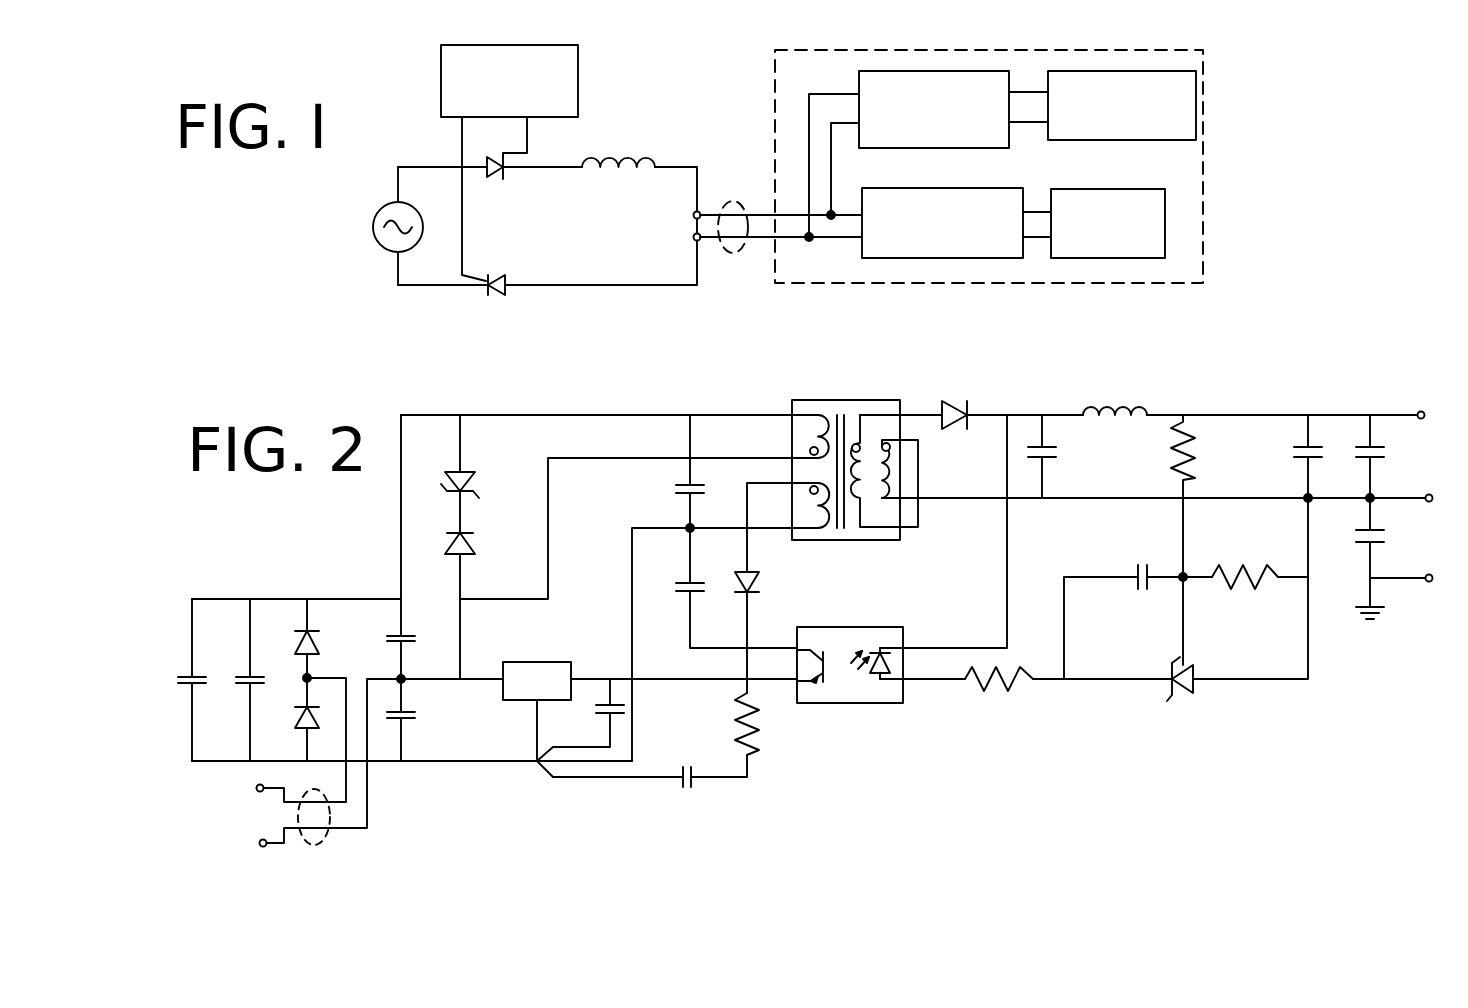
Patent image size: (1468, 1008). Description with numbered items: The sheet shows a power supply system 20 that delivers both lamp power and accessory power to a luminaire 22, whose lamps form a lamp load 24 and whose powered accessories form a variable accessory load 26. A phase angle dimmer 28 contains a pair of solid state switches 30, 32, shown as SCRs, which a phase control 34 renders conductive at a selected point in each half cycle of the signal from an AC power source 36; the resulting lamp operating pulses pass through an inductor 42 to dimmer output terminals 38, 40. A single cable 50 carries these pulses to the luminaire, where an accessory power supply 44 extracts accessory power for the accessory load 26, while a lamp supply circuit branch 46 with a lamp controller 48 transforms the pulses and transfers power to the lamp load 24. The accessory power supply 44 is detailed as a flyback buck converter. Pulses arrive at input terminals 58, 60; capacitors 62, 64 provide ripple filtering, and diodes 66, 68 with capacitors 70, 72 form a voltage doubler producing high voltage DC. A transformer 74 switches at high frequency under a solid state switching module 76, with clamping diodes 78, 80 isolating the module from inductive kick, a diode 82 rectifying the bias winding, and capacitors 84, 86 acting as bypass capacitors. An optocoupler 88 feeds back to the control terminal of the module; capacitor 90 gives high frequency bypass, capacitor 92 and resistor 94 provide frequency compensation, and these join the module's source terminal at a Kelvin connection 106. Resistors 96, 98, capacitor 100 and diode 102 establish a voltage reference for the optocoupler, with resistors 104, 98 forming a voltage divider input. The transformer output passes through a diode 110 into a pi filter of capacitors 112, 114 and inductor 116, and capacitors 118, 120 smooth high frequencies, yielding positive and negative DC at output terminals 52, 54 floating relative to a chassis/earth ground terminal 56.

In FIG. 1, the power supply system 20 is at (1270, 80).
In FIG. 1, the luminaire 22 is at (838, 284).
In FIG. 1, the lamp load 24 is at (1133, 258).
In FIG. 1, the accessory load 26 is at (1138, 71).
In FIG. 1, the phase angle dimmer 28 is at (632, 90).
In FIG. 1, the solid state switch 30 is at (504, 172).
In FIG. 1, the solid state switch 32 is at (487, 290).
In FIG. 1, the phase control 34 is at (441, 80).
In FIG. 1, the AC power source 36 is at (419, 220).
In FIG. 1, the dimmer output terminal 38 is at (693, 215).
In FIG. 2, the dimmer output terminal 38 is at (256, 789).
In FIG. 1, the dimmer output terminal 40 is at (693, 238).
In FIG. 2, the dimmer output terminal 40 is at (259, 843).
In FIG. 1, the inductor 42 is at (648, 163).
In FIG. 1, the accessory power supply 44 is at (952, 71).
In FIG. 1, the lamp supply circuit branch 46 is at (1214, 233).
In FIG. 1, the lamp controller 48 is at (927, 258).
In FIG. 1, the cable 50 is at (733, 200).
In FIG. 2, the cable 50 is at (330, 838).
In FIG. 2, the output terminal 52 is at (1419, 410).
In FIG. 2, the output terminal 54 is at (1428, 502).
In FIG. 2, the chassis/earth ground terminal 56 is at (1429, 588).
In FIG. 2, the power supply input terminal 58 is at (311, 677).
In FIG. 2, the power supply input terminal 60 is at (405, 679).
In FIG. 2, the capacitor 62 is at (194, 676).
In FIG. 2, the capacitor 64 is at (248, 685).
In FIG. 2, the diode 66 is at (300, 630).
In FIG. 2, the diode 68 is at (298, 721).
In FIG. 2, the capacitor 70 is at (391, 630).
In FIG. 2, the capacitor 72 is at (410, 715).
In FIG. 2, the transformer 74 is at (866, 400).
In FIG. 2, the solid state switching module 76 is at (558, 662).
In FIG. 2, the clamping diode 78 is at (478, 466).
In FIG. 2, the clamping diode 80 is at (470, 538).
In FIG. 2, the diode 82 is at (760, 580).
In FIG. 2, the capacitor 84 is at (676, 489).
In FIG. 2, the capacitor 86 is at (685, 583).
In FIG. 2, the optocoupler 88 is at (847, 703).
In FIG. 2, the capacitor 90 is at (600, 714).
In FIG. 2, the capacitor 92 is at (696, 787).
In FIG. 2, the resistor 94 is at (745, 726).
In FIG. 2, the resistor 96 is at (1005, 689).
In FIG. 2, the resistor 98 is at (1252, 583).
In FIG. 2, the capacitor 100 is at (1140, 590).
In FIG. 2, the diode 102 is at (1195, 692).
In FIG. 2, the resistor 104 is at (1195, 428).
In FIG. 2, the Kelvin connection 106 is at (537, 761).
In FIG. 2, the diode 110 is at (970, 404).
In FIG. 2, the capacitor 112 is at (1050, 455).
In FIG. 2, the capacitor 114 is at (1298, 456).
In FIG. 2, the inductor 116 is at (1157, 399).
In FIG. 2, the capacitor 118 is at (1386, 449).
In FIG. 2, the capacitor 120 is at (1360, 547).